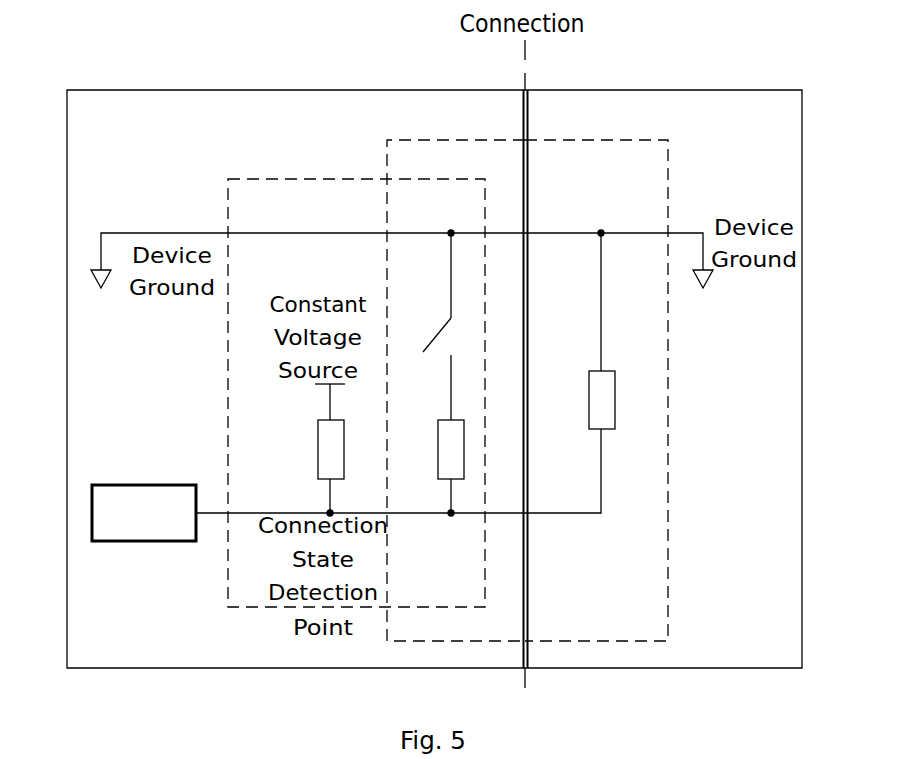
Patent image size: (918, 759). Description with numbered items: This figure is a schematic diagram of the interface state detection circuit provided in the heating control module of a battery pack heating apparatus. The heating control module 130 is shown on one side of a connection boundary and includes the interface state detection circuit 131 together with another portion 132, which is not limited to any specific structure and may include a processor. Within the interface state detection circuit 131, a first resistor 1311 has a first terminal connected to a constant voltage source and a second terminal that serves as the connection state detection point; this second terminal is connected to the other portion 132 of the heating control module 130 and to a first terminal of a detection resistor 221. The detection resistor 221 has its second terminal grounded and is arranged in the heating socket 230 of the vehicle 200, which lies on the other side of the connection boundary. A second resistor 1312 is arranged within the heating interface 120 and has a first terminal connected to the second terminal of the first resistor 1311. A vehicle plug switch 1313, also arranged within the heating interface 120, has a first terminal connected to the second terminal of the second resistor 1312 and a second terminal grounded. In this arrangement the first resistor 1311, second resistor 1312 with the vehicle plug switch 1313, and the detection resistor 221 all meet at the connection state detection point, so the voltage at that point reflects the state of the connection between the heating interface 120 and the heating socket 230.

The heating control module 130 is at (296, 379).
The vehicle 200 is at (663, 379).
The interface state detection circuit 131 is at (356, 393).
The heating interface 120 is at (456, 390).
The heating socket 230 is at (596, 390).
The first resistor 1311 is at (301, 448).
The second resistor 1312 is at (425, 434).
The vehicle plug switch 1313 is at (425, 292).
The detection resistor 221 is at (581, 331).
The other portion 132 is at (144, 513).